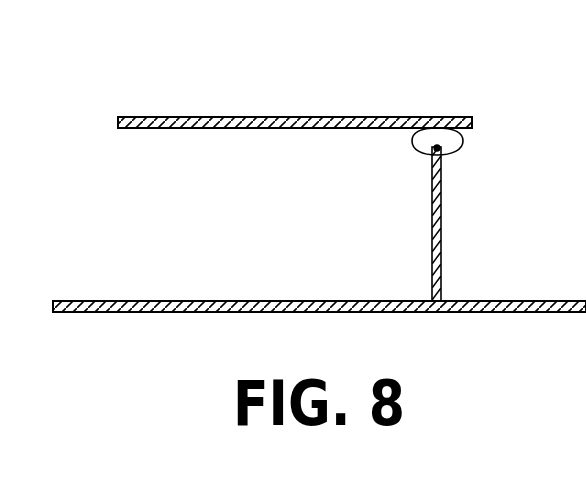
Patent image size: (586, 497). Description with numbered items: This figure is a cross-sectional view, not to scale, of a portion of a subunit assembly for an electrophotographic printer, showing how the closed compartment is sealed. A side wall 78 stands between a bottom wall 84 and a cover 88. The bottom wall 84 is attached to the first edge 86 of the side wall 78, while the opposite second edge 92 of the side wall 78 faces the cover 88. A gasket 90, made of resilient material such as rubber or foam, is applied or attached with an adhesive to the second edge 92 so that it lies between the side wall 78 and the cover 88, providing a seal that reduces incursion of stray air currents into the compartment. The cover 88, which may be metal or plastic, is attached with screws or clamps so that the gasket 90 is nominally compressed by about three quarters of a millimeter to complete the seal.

The cover 88 is at (295, 77).
The bottom wall 84 is at (377, 320).
The side wall 78 is at (432, 205).
The first edge 86 is at (445, 293).
The gasket 90 is at (450, 147).
The second edge 92 is at (442, 153).